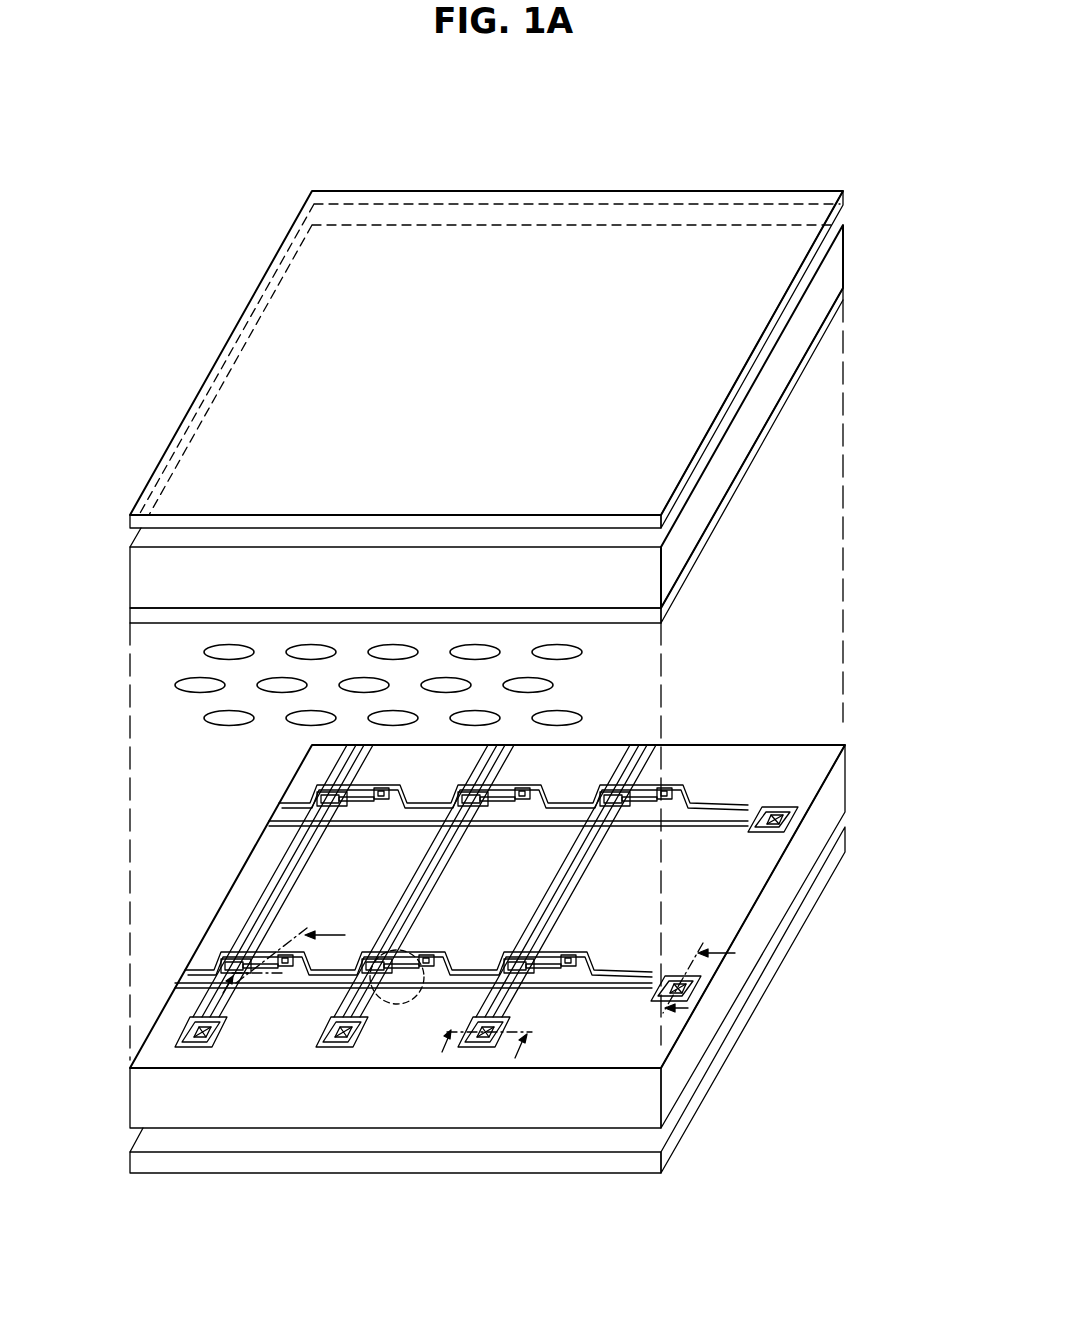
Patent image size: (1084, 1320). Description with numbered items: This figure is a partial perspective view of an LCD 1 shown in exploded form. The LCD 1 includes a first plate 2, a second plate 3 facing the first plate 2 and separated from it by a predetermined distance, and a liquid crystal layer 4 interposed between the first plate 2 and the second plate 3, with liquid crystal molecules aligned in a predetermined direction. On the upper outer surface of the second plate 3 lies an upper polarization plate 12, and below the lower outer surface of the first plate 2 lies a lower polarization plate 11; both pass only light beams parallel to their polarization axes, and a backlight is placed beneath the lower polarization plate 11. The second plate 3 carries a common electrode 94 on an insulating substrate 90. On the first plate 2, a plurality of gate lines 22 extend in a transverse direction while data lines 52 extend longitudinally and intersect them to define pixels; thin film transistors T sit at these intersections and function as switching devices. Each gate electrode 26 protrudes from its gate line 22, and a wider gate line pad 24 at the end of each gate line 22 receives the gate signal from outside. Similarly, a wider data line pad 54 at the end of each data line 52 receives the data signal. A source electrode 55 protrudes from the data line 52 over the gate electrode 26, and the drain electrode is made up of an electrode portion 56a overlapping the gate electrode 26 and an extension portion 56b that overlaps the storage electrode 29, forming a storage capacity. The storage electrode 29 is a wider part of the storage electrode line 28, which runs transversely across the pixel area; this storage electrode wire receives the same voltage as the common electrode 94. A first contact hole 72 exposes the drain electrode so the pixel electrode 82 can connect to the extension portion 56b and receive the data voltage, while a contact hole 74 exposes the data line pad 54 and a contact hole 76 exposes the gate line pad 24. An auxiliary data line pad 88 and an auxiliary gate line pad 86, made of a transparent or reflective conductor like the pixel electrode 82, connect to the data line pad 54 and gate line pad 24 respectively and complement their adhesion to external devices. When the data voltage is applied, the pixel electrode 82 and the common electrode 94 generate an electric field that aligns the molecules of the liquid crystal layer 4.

The LCD 1 is at (691, 110).
The first plate 2 is at (882, 748).
The second plate 3 is at (893, 308).
The liquid crystal layer 4 is at (122, 612).
The lower polarization plate 11 is at (826, 876).
The upper polarization plate 12 is at (242, 373).
The gate line 22 is at (270, 985).
The gate line pad 24 is at (682, 983).
The gate electrode 26 is at (268, 968).
The storage electrode line 28 is at (473, 972).
The storage electrode 29 is at (583, 957).
The data line 52 is at (290, 990).
The data line pad 54 is at (485, 1046).
The source electrode 55 is at (512, 978).
The electrode portion 56a is at (540, 976).
The extension portion 56b is at (578, 960).
The first contact hole 72 is at (430, 962).
The contact hole 74 is at (488, 1040).
The contact hole 76 is at (690, 994).
The pixel electrode 82 is at (290, 897).
The auxiliary gate line pad 86 is at (663, 988).
The auxiliary data line pad 88 is at (488, 1046).
The insulating substrate 90 is at (791, 344).
The common electrode 94 is at (792, 390).
The thin film transistor T is at (399, 1004).